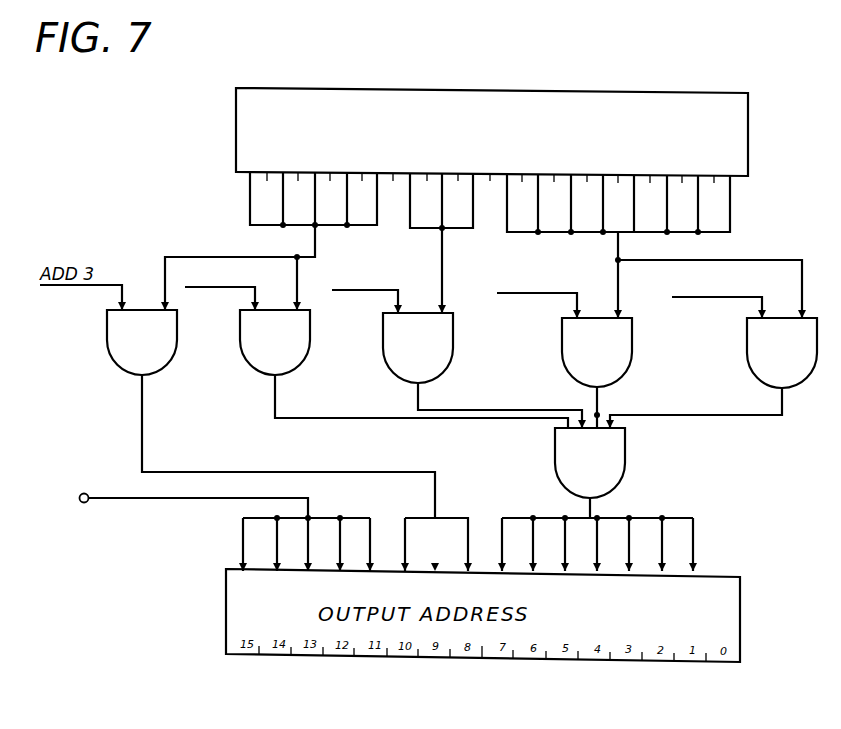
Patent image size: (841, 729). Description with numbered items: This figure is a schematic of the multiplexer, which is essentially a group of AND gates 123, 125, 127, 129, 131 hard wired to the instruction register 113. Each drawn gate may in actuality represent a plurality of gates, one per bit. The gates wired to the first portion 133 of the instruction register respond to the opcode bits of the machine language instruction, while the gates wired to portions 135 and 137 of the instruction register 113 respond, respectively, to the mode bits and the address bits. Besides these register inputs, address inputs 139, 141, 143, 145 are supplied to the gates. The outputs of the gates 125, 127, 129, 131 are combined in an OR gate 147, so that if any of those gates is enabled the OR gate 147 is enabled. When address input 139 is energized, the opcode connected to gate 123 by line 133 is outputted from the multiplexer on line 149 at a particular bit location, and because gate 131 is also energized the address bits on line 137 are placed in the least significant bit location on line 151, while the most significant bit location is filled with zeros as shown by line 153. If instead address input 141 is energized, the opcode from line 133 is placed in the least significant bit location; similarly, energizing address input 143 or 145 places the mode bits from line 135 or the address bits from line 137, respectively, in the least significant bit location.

The instruction register 113 is at (633, 92).
The first portion of the instruction register 133 is at (316, 238).
The mode bit portion of the instruction register 135 is at (443, 240).
The address bit portion of the instruction register 137 is at (619, 246).
The AND gate 123 is at (105, 343).
The AND gate 125 is at (240, 362).
The AND gate 127 is at (385, 366).
The AND gate 129 is at (562, 368).
The AND gate 131 is at (745, 368).
The address input 141 is at (250, 297).
The address input 143 is at (395, 302).
The address input 145 is at (570, 303).
The address input 139 is at (758, 306).
The OR gate 147 is at (627, 468).
The output line 149 is at (143, 440).
The output line 151 is at (588, 508).
The zero line 153 is at (165, 500).